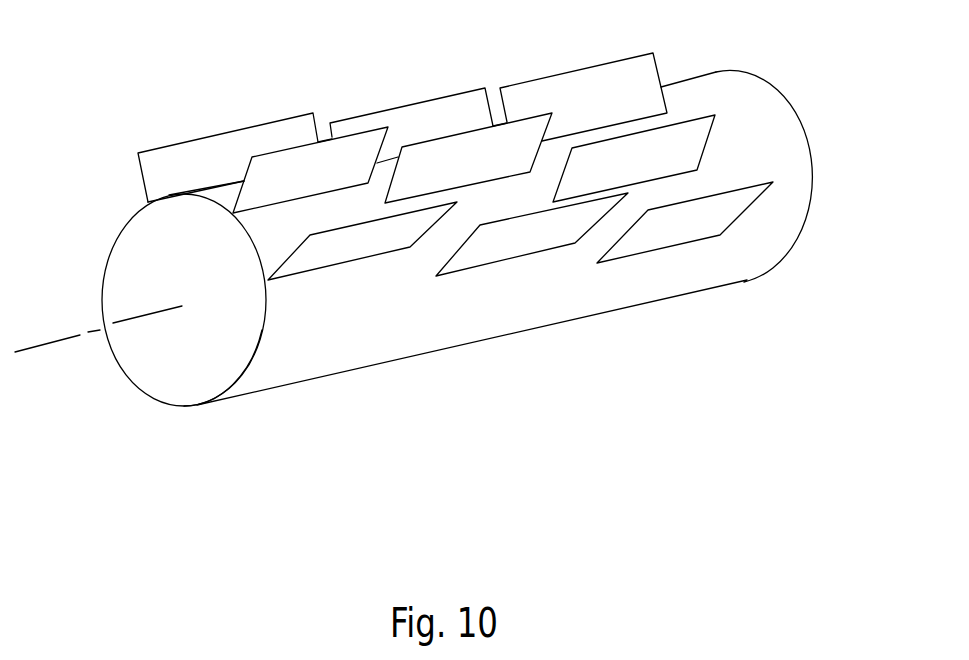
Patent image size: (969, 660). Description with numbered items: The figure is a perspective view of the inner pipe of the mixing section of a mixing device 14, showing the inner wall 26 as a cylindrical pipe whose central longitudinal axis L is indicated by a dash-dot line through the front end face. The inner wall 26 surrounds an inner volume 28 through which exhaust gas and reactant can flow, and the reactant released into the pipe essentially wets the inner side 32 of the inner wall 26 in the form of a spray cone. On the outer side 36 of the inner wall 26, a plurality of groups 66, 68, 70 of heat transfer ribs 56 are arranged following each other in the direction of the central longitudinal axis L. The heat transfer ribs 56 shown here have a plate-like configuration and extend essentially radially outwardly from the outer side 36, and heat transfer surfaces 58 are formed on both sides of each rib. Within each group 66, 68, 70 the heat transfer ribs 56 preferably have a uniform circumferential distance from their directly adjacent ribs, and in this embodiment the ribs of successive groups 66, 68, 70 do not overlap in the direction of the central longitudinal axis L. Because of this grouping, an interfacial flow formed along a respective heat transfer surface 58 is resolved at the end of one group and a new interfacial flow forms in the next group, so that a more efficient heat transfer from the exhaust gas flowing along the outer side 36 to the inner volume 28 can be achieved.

The mixing device 14 is at (467, 259).
The inner wall 26 is at (537, 282).
The inner volume 28 is at (135, 243).
The inner side 32 is at (172, 383).
The outer side 36 is at (292, 365).
The heat transfer ribs 56 is at (395, 105).
The heat transfer surfaces 58 is at (207, 162).
The group of heat transfer ribs 66 is at (371, 119).
The group of heat transfer ribs 68 is at (348, 97).
The group of heat transfer ribs 70 is at (535, 63).
The central longitudinal axis L is at (60, 342).